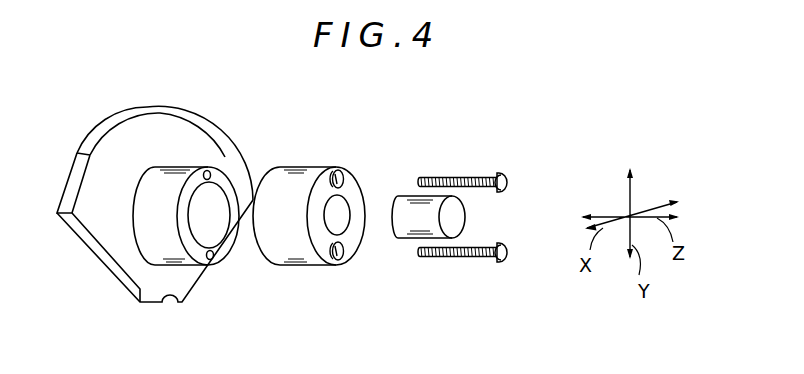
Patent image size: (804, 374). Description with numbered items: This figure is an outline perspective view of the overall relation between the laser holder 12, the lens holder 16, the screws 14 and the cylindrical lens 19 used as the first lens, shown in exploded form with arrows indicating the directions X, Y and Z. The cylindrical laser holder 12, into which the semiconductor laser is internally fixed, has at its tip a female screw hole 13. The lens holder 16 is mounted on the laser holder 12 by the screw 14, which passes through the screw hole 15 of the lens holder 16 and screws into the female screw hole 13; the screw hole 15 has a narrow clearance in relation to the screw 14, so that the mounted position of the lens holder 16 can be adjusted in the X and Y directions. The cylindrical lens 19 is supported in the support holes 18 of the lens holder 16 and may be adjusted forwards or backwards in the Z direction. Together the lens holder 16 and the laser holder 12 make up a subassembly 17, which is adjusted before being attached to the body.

The laser holder 12 is at (177, 123).
The female screw hole 13 is at (208, 247).
The screw 14 is at (511, 183).
The screw hole 15 is at (343, 246).
The lens holder 16 is at (293, 173).
The subassembly 17 is at (297, 309).
The support holes 18 is at (330, 222).
The cylindrical lens 19 is at (400, 241).